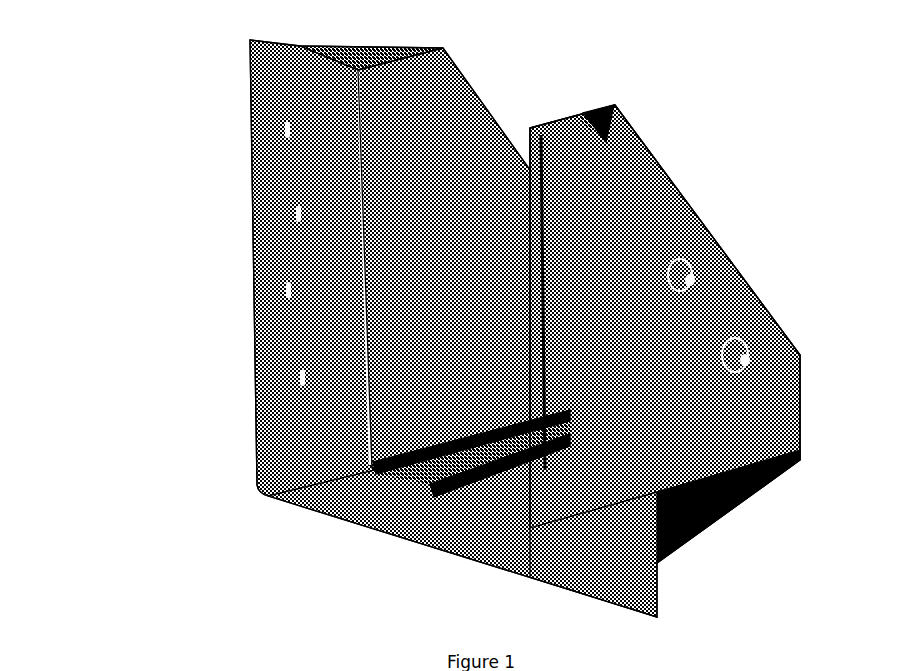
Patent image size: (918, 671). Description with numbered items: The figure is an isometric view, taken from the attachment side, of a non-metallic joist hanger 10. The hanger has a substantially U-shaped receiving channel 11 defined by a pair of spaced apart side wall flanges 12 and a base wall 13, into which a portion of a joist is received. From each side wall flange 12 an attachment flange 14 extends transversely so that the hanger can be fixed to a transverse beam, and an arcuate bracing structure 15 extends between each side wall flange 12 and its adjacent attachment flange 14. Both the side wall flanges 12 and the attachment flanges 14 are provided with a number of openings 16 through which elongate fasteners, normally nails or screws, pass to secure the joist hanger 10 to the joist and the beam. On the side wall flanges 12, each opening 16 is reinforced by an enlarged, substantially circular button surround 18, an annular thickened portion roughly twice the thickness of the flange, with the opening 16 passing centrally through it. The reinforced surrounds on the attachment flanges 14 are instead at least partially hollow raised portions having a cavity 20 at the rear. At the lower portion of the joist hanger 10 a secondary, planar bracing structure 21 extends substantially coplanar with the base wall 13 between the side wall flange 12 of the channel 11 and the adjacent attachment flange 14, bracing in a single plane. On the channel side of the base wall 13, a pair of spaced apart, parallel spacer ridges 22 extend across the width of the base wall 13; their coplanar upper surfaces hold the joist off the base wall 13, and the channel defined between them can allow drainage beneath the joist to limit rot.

The non-metallic joist hanger 10 is at (152, 73).
The receiving channel 11 is at (533, 113).
The side wall flange 12 is at (463, 78).
The base wall 13 is at (467, 492).
The attachment flange 14 is at (272, 340).
The arcuate bracing structure 15 is at (363, 47).
The opening 16 is at (272, 128).
The button surround 18 is at (707, 263).
The cavity 20 is at (315, 132).
The secondary planar bracing structure 21 is at (712, 515).
The spacer ridge 22 is at (408, 470).